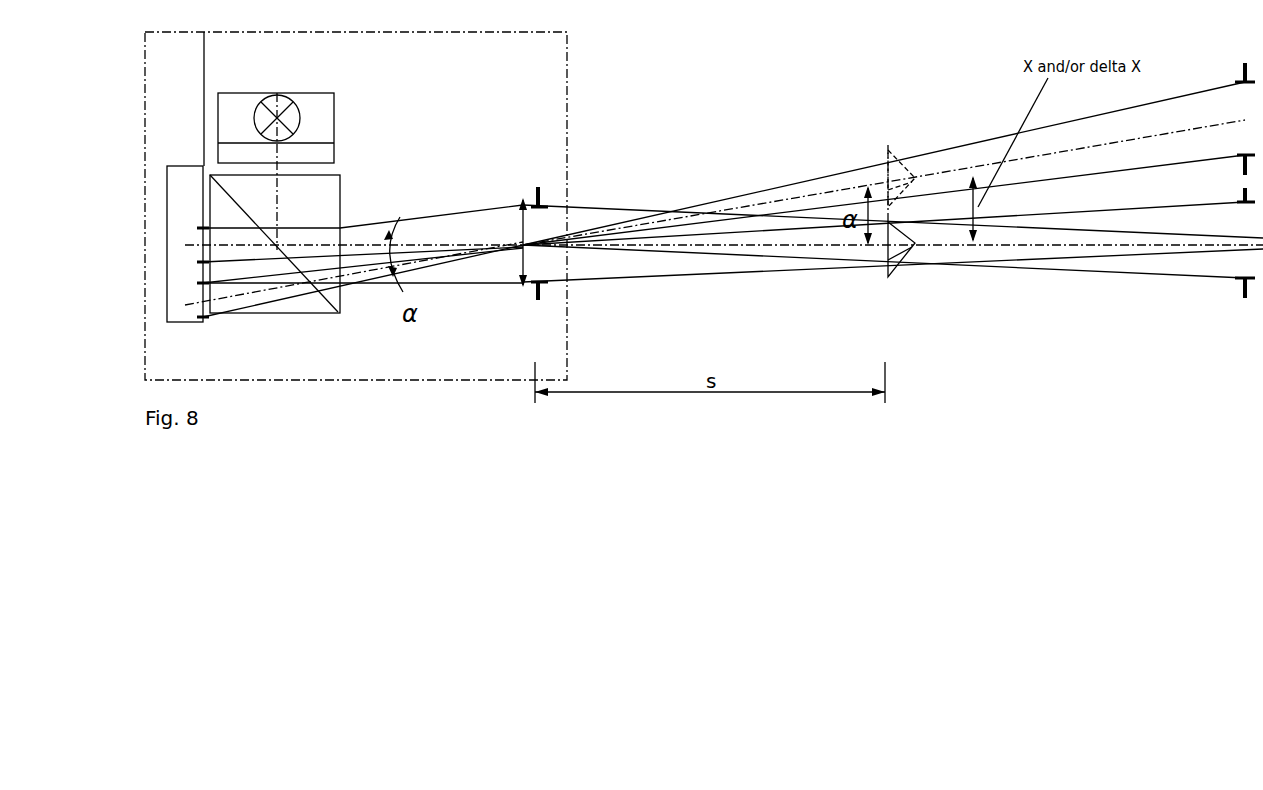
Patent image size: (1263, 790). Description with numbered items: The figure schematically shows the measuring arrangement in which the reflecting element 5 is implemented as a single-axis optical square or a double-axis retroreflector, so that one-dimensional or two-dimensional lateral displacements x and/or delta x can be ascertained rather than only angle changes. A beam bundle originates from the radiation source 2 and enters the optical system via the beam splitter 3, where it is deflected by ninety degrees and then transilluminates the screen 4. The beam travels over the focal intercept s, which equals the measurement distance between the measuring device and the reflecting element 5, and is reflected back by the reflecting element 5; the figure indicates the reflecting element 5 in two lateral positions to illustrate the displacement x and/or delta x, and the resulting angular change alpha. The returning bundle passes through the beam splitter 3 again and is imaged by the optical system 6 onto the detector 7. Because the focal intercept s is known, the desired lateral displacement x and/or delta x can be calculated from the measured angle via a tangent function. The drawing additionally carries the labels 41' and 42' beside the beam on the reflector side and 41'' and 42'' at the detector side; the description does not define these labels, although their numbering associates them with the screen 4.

The radiation source 2 is at (252, 103).
The beam splitter 3 is at (298, 305).
The screen 4 is at (543, 190).
The reflecting element 5 is at (917, 318).
The optical system 6 is at (521, 203).
The detector 7 is at (190, 175).
The image of aperture edge 4_1 41' is at (1215, 291).
The image of aperture edge 4_2 42' is at (1215, 92).
The detector image of aperture edge 4_1 41'' is at (189, 134).
The detector image of aperture edge 4_2 42'' is at (207, 328).